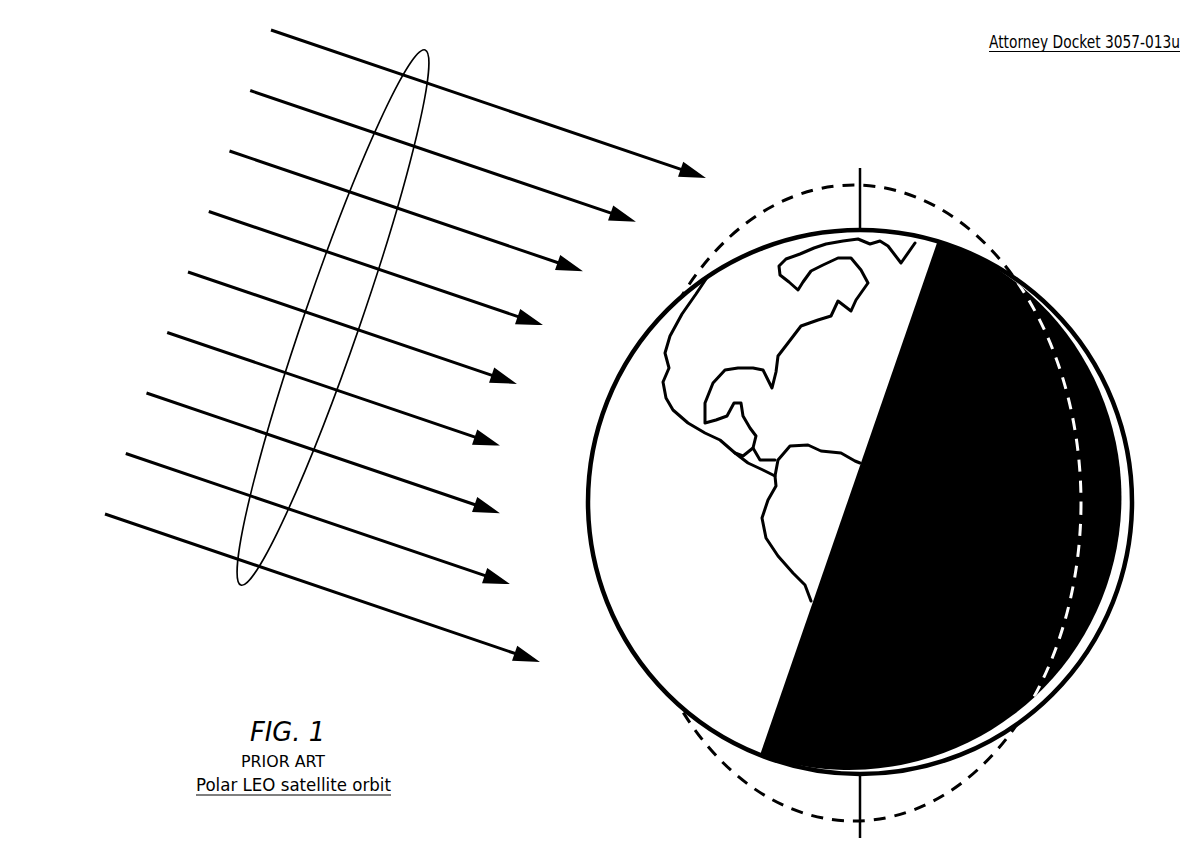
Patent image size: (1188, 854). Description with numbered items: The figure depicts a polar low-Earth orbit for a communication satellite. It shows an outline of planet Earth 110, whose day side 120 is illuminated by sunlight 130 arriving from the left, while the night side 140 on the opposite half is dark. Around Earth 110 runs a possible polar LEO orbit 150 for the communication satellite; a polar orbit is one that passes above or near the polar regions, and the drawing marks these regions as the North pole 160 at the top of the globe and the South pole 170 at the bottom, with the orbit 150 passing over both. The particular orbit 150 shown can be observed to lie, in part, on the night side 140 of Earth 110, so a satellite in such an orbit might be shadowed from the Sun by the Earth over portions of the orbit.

The Earth 110 is at (597, 588).
The day side 120 is at (789, 420).
The sunlight 130 is at (230, 577).
The night side 140 is at (1069, 333).
The polar LEO orbit 150 is at (970, 233).
The North pole 160 is at (852, 163).
The South pole 170 is at (852, 820).